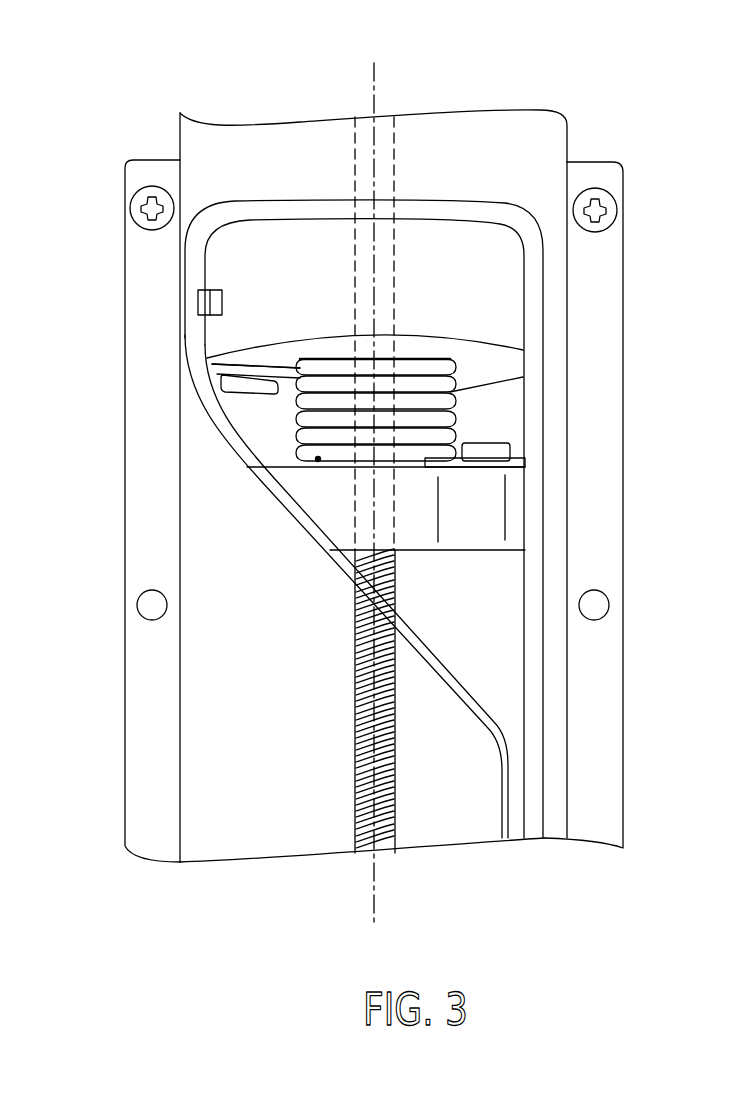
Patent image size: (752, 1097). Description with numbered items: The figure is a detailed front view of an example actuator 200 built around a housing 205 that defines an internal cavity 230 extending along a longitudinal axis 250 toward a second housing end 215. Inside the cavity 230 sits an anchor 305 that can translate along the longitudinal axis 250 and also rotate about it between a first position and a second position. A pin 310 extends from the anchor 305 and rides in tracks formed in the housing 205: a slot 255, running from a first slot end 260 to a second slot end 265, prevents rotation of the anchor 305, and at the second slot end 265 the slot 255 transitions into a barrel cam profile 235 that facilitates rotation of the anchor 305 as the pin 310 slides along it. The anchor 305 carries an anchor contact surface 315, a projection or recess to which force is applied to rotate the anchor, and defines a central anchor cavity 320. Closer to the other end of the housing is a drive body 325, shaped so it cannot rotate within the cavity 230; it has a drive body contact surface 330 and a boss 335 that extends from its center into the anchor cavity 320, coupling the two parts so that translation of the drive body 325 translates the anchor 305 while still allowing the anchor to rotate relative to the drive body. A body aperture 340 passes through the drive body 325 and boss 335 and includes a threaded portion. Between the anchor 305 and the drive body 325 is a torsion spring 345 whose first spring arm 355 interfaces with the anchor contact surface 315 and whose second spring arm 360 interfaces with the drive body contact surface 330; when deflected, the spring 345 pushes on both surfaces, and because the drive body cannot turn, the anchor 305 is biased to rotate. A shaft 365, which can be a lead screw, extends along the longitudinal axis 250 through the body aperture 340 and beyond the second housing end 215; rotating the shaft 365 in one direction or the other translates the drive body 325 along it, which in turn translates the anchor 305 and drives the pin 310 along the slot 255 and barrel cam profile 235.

The actuator 200 is at (114, 87).
The housing 205 is at (147, 693).
The second housing end 215 is at (223, 123).
The cavity 230 is at (488, 652).
The barrel cam profile 235 is at (235, 431).
The longitudinal axis 250 is at (372, 100).
The slot 255 is at (547, 785).
The first slot end 260 is at (535, 838).
The second slot end 265 is at (527, 732).
The anchor 305 is at (503, 290).
The pin 310 is at (200, 300).
The anchor contact surface 315 is at (222, 387).
The anchor cavity 320 is at (450, 366).
The drive body 325 is at (487, 537).
The drive body contact surface 330 is at (500, 452).
The boss 335 is at (430, 465).
The body aperture 340 is at (355, 528).
The spring 345 is at (442, 430).
The first spring arm 355 is at (218, 368).
The second spring arm 360 is at (497, 465).
The shaft 365 is at (397, 577).